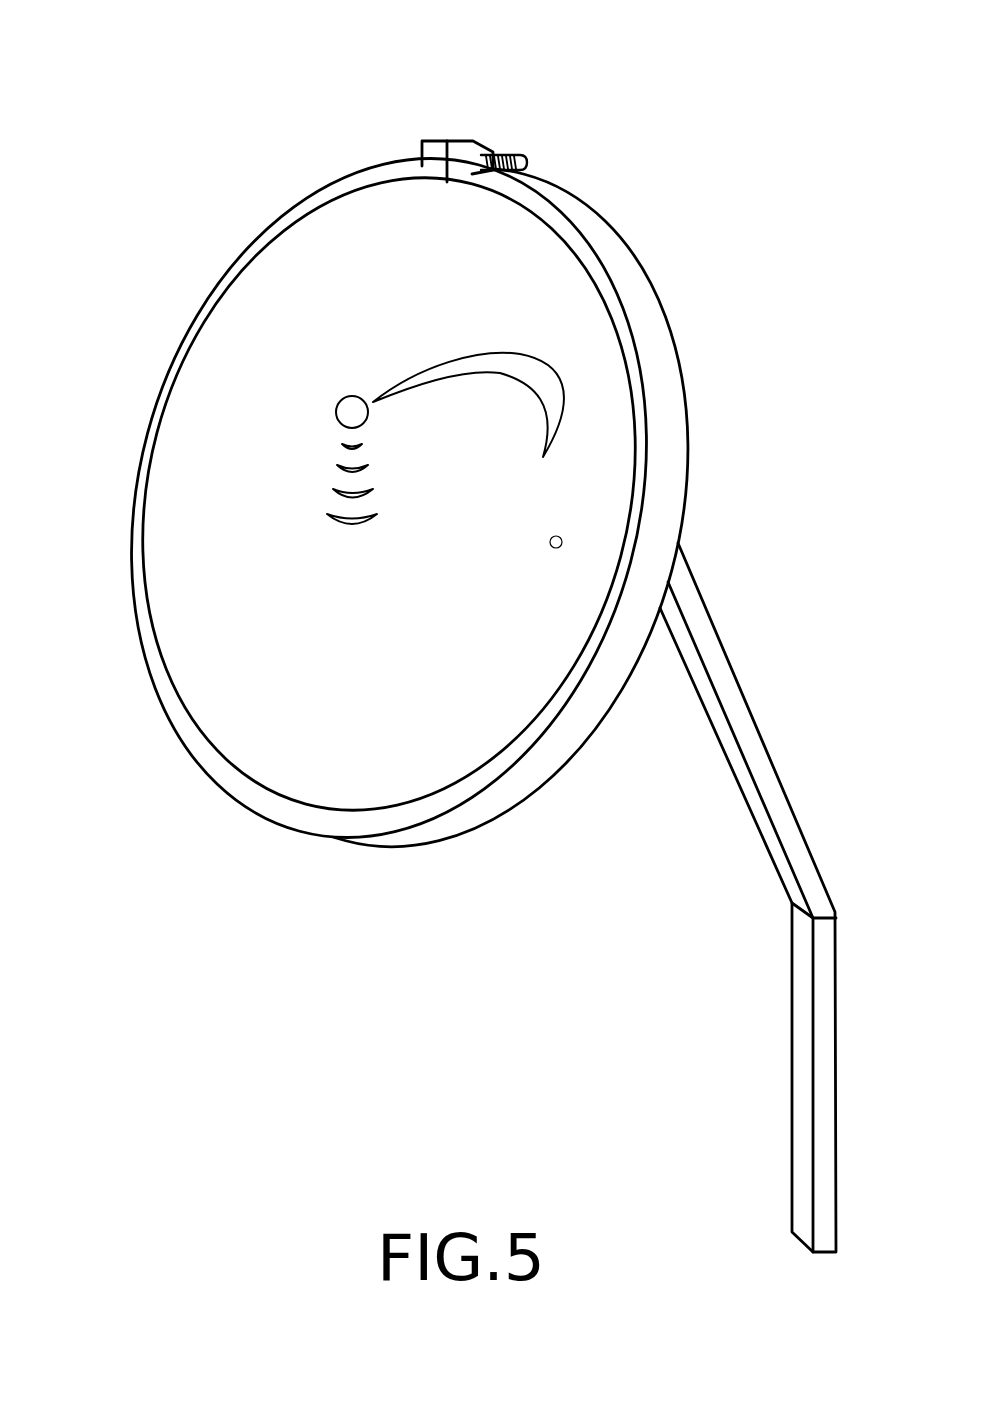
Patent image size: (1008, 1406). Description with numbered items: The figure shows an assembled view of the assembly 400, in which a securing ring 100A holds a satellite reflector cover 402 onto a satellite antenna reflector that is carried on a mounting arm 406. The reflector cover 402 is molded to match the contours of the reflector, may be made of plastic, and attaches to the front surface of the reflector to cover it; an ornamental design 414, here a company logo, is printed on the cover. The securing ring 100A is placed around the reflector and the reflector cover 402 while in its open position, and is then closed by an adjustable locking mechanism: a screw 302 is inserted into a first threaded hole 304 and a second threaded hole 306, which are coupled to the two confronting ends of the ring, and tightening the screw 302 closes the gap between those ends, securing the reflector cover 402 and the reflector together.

The assembly 400 is at (150, 108).
The securing ring 100A is at (655, 308).
The satellite reflector cover 402 is at (363, 215).
The first threaded hole 304 is at (430, 141).
The second threaded hole 306 is at (470, 141).
The screw 302 is at (527, 162).
The ornamental design 414 is at (378, 580).
The mounting arm 406 is at (787, 800).